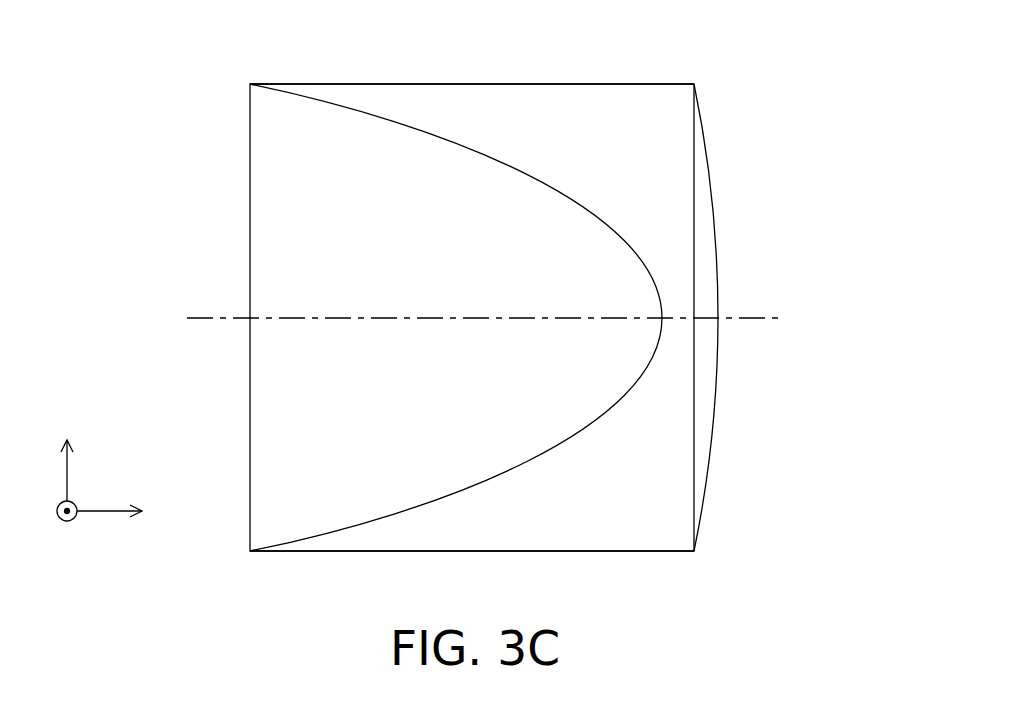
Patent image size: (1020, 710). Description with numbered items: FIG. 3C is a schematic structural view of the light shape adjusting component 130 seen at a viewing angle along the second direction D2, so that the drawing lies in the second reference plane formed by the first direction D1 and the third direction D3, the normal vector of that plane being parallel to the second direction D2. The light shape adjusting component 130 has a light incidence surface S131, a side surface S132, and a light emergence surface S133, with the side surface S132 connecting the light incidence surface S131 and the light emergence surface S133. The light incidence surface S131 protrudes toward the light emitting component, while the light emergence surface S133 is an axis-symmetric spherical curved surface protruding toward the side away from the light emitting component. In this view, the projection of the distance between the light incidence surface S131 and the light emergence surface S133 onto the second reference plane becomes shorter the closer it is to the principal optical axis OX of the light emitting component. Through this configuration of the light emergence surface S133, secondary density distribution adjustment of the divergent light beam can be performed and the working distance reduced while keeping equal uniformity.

The light shape adjusting component 130 is at (848, 603).
The light incidence surface S131 is at (322, 255).
The side surface S132 is at (620, 155).
The light emergence surface S133 is at (715, 399).
The principal optical axis OX is at (504, 319).
The first direction D1 is at (68, 454).
The second direction D2 is at (58, 531).
The third direction D3 is at (125, 512).